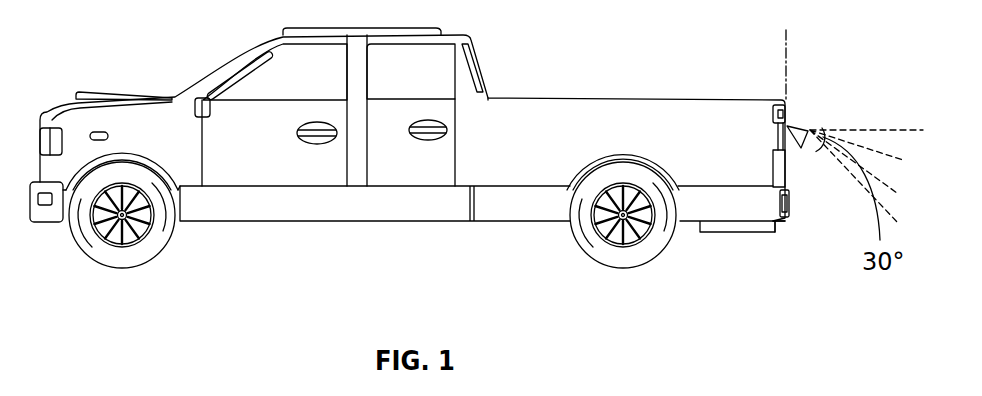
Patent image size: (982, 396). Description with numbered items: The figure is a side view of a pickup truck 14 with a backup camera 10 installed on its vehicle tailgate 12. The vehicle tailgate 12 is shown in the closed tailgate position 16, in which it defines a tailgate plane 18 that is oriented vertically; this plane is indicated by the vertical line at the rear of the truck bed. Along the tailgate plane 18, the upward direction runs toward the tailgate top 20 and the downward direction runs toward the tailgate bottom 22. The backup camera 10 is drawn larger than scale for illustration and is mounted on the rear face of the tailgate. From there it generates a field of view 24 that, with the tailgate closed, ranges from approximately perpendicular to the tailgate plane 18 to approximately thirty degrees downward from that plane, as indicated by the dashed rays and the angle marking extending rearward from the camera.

The backup camera 10 is at (812, 126).
The vehicle tailgate 12 is at (788, 164).
The pickup truck 14 is at (537, 150).
The closed tailgate position 16 is at (794, 187).
The tailgate plane 18 is at (785, 77).
The tailgate top 20 is at (787, 110).
The tailgate bottom 22 is at (780, 223).
The field of view 24 is at (917, 130).